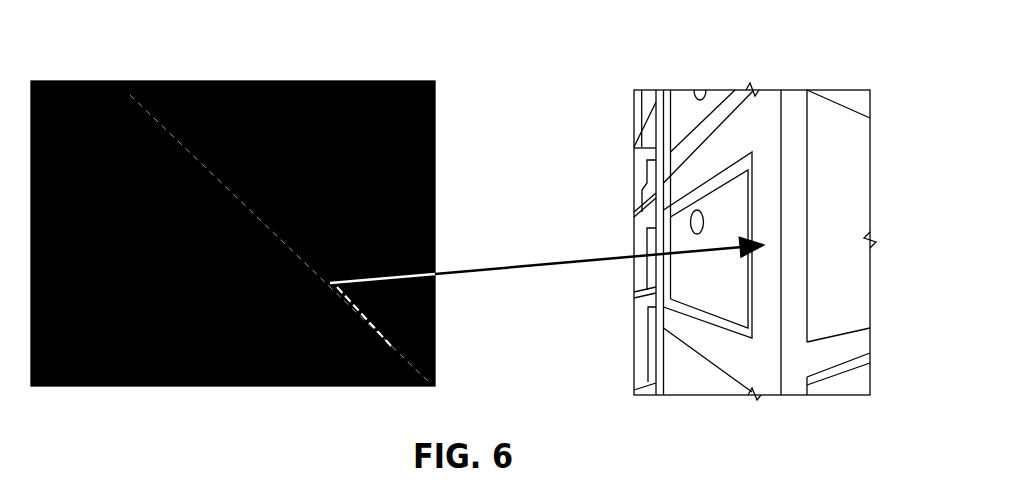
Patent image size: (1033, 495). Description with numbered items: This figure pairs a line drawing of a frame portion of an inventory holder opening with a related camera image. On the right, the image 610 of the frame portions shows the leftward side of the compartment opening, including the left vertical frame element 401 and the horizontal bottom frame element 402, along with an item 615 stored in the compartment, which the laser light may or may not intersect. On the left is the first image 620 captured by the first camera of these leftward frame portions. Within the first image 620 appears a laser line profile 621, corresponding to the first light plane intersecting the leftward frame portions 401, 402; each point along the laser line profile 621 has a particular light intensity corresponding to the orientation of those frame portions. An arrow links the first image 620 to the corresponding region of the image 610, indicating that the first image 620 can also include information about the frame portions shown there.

The first image 620 is at (302, 65).
The laser line profile 621 is at (356, 322).
The image of the frame portions 610 is at (787, 67).
The item 615 is at (846, 288).
The frame element 401 is at (766, 350).
The frame element 402 is at (847, 383).